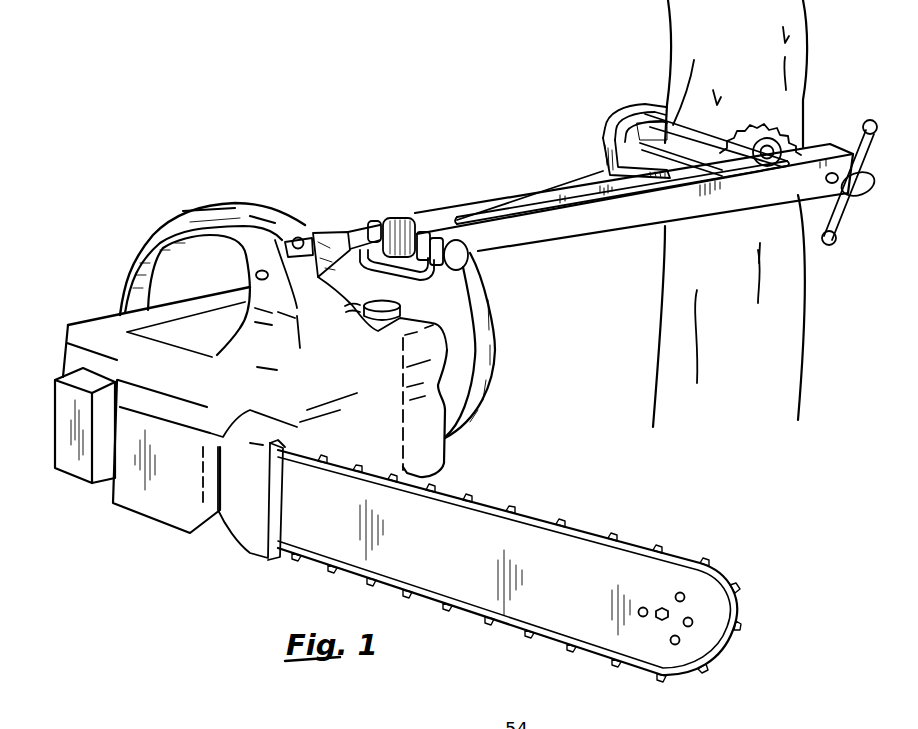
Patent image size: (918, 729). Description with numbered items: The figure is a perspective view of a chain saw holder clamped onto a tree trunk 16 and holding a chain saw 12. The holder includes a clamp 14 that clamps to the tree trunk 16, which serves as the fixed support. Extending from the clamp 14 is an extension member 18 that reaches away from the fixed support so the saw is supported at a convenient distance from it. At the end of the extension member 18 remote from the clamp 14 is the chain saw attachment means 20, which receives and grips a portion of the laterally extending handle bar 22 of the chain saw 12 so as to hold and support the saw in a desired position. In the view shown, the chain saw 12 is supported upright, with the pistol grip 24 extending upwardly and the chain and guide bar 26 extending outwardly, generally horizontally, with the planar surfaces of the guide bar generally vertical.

The chain saw 12 is at (73, 490).
The clamp 14 is at (810, 137).
The tree trunk 16 is at (790, 37).
The extension member 18 is at (602, 220).
The chain saw attachment means 20 is at (375, 214).
The handle bar 22 is at (483, 308).
The pistol grip 24 is at (227, 203).
The chain and guide bar 26 is at (717, 568).